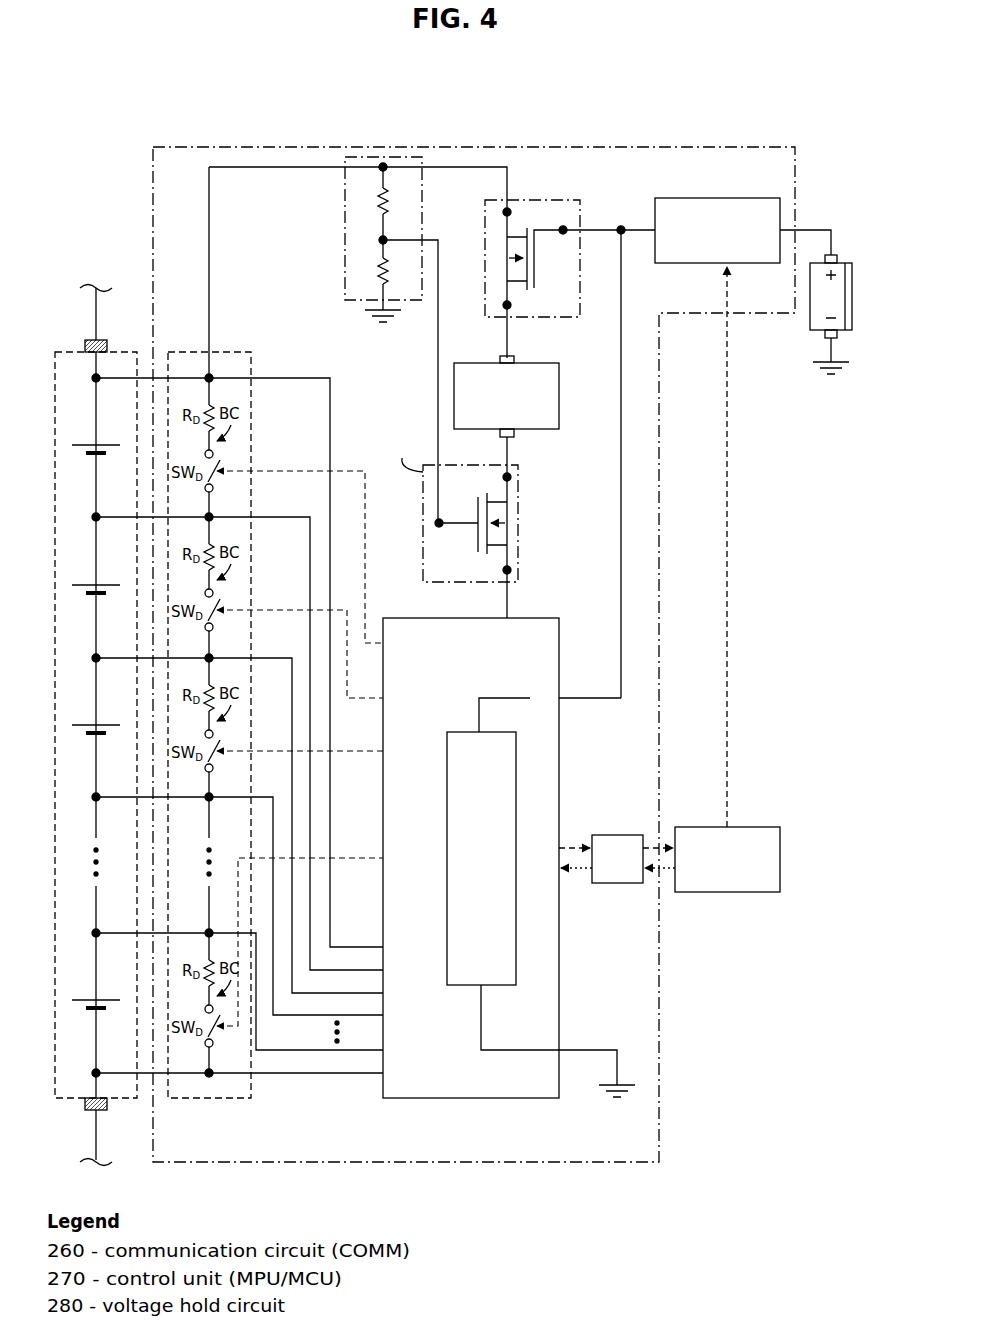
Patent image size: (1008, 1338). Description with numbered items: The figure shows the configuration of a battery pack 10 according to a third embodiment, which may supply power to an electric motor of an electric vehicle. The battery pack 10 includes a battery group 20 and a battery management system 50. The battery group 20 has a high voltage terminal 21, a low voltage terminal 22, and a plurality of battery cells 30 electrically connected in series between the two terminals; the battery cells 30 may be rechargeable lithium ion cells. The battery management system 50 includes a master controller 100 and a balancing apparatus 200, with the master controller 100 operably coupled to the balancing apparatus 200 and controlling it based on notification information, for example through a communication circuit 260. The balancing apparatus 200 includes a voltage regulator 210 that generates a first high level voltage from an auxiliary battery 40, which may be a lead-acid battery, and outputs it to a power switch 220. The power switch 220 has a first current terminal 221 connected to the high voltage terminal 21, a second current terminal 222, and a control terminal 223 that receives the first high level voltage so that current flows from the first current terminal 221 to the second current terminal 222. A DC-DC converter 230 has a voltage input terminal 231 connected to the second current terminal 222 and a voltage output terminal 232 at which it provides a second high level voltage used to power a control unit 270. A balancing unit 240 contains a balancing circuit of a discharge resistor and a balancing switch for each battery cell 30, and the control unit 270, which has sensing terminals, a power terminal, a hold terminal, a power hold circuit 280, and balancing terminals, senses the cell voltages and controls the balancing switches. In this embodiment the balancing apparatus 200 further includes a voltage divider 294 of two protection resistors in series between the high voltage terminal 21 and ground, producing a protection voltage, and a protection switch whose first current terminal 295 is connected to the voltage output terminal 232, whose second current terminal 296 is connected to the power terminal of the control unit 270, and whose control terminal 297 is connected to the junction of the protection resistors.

The battery pack 10 is at (80, 101).
The battery group 20 is at (80, 342).
The high voltage terminal 21 is at (103, 340).
The low voltage terminal 22 is at (104, 1110).
The battery cell 30 is at (86, 445).
The auxiliary battery 40 is at (845, 265).
The battery management system 50 is at (761, 650).
The master controller 100 is at (697, 827).
The balancing apparatus 200 is at (183, 137).
The voltage regulator 210 is at (678, 198).
The power switch 220 is at (485, 214).
The first current terminal 221 is at (511, 209).
The second current terminal 222 is at (510, 309).
The control terminal 223 is at (564, 226).
The DC-DC converter 230 is at (475, 355).
The voltage input terminal 231 is at (514, 360).
The voltage output terminal 232 is at (514, 433).
The balancing unit 240 is at (182, 343).
The communication circuit 260 is at (617, 828).
The control unit 270 is at (400, 611).
The power hold circuit 280 is at (516, 798).
The voltage divider 294 is at (345, 202).
The first current terminal 295 is at (504, 474).
The second current terminal 296 is at (504, 573).
The control terminal 297 is at (436, 523).